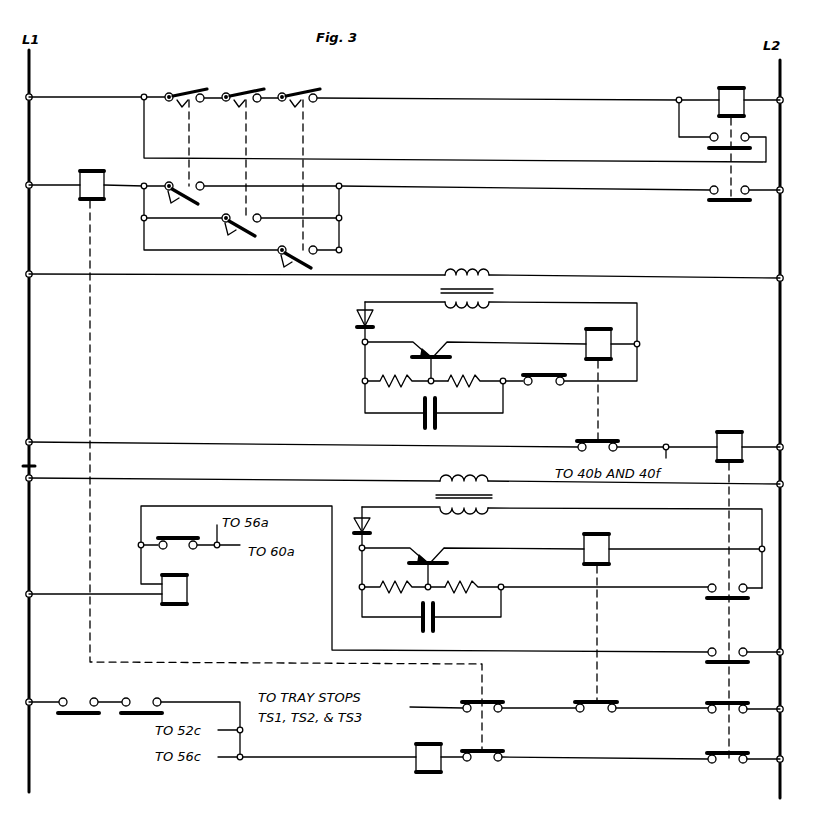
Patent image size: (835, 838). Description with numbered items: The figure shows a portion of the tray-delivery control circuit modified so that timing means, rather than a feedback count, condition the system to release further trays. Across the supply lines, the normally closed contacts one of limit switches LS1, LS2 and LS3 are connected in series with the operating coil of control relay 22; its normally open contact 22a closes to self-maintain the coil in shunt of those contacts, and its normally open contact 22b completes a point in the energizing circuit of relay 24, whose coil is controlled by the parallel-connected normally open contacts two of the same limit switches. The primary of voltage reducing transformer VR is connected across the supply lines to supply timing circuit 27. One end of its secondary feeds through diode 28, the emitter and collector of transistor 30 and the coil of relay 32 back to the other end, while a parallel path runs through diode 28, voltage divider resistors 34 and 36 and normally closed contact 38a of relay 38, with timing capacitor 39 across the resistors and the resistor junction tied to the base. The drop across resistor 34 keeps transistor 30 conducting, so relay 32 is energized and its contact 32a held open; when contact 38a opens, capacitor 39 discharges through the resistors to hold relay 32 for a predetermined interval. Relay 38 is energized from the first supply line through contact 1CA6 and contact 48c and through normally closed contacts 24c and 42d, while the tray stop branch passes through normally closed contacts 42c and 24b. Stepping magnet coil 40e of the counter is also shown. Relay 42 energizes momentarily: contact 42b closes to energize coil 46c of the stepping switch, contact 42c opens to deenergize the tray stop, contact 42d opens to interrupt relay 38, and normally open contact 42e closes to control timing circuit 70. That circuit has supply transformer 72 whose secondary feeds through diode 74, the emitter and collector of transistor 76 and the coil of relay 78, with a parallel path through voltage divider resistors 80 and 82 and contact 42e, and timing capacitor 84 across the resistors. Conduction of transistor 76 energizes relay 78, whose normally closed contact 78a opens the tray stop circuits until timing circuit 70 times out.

The control relay 22 is at (720, 93).
The normally open contact 22a is at (708, 142).
The normally open contact 22b is at (726, 192).
The relay 24 is at (82, 172).
The normally closed contact 24b is at (492, 712).
The normally closed contact 24c is at (490, 763).
The timing circuit 27 is at (502, 357).
The diode 28 is at (373, 319).
The transistor 30 is at (431, 350).
The relay 32 is at (590, 333).
The normally closed contact 32a is at (605, 440).
The voltage divider resistor 34 is at (410, 386).
The voltage divider resistor 36 is at (472, 378).
The relay 38 is at (415, 766).
The normally closed contact 38a is at (543, 386).
The timing capacitor 39 is at (421, 418).
The relay 42 is at (737, 432).
The normally open contact 42b is at (722, 655).
The normally closed contact 42c is at (718, 714).
The normally closed contact 42d is at (721, 763).
The normally open contact 42e is at (722, 590).
The stepping magnet coil 40e is at (189, 536).
The coil 46c is at (188, 591).
The contact 48c is at (145, 706).
The timing circuit 70 is at (563, 562).
The supply transformer 72 is at (440, 497).
The diode 74 is at (371, 526).
The transistor 76 is at (432, 556).
The relay 78 is at (608, 544).
The normally closed contact 78a is at (597, 712).
The voltage divider resistor 80 is at (407, 591).
The voltage divider resistor 82 is at (470, 585).
The timing capacitor 84 is at (420, 623).
The limit switch LS1 is at (189, 176).
The limit switch LS2 is at (246, 175).
The limit switch LS3 is at (303, 175).
The voltage reducing transformer VR is at (440, 291).
The contact 1CA6 is at (80, 706).